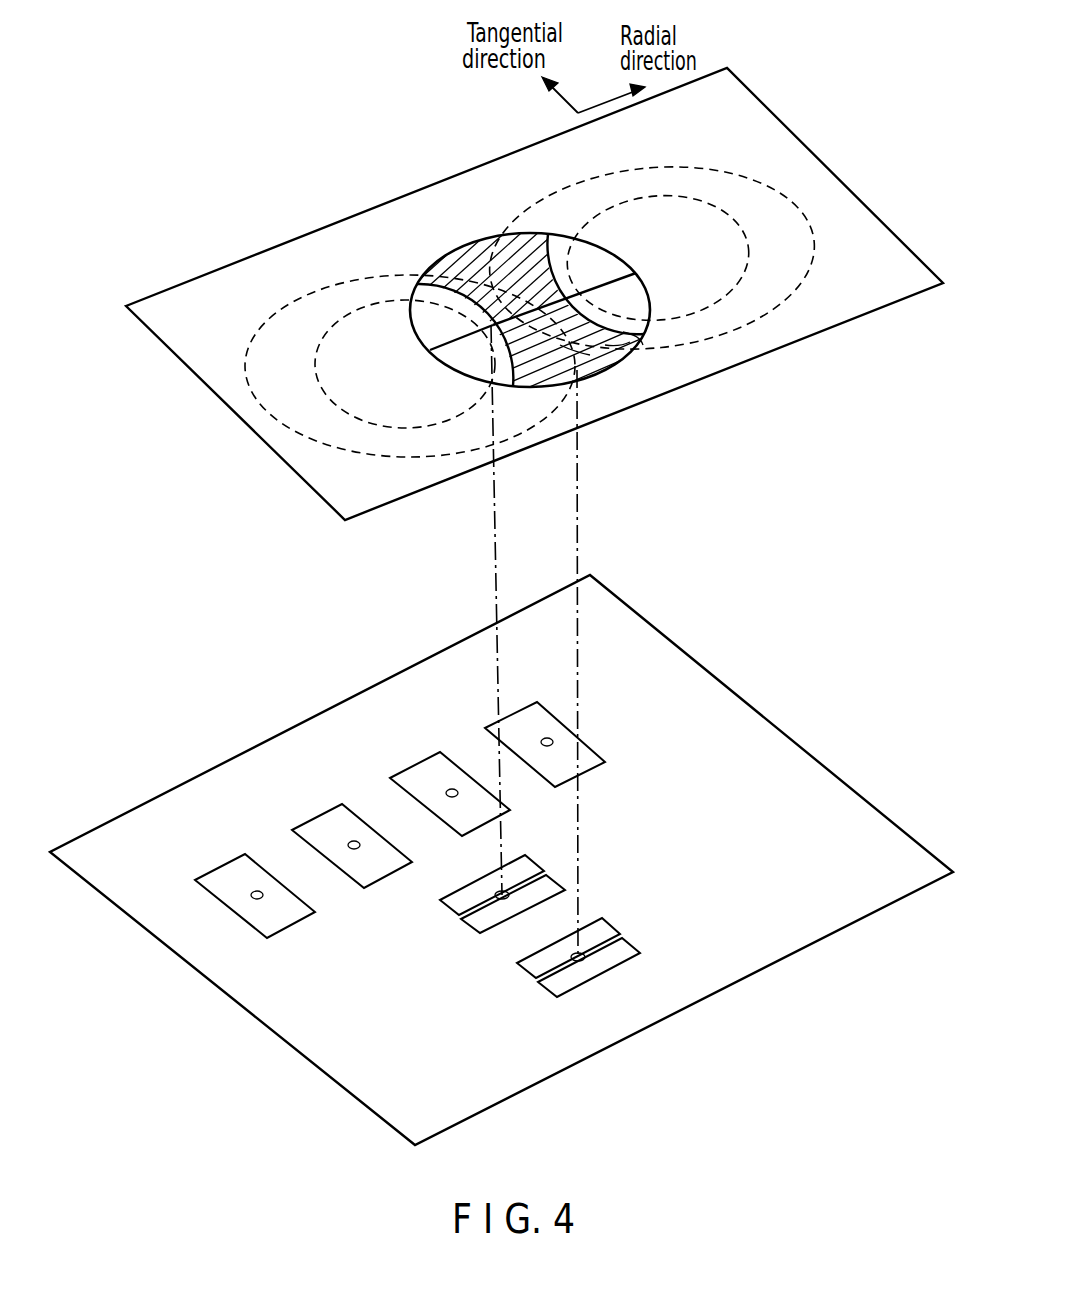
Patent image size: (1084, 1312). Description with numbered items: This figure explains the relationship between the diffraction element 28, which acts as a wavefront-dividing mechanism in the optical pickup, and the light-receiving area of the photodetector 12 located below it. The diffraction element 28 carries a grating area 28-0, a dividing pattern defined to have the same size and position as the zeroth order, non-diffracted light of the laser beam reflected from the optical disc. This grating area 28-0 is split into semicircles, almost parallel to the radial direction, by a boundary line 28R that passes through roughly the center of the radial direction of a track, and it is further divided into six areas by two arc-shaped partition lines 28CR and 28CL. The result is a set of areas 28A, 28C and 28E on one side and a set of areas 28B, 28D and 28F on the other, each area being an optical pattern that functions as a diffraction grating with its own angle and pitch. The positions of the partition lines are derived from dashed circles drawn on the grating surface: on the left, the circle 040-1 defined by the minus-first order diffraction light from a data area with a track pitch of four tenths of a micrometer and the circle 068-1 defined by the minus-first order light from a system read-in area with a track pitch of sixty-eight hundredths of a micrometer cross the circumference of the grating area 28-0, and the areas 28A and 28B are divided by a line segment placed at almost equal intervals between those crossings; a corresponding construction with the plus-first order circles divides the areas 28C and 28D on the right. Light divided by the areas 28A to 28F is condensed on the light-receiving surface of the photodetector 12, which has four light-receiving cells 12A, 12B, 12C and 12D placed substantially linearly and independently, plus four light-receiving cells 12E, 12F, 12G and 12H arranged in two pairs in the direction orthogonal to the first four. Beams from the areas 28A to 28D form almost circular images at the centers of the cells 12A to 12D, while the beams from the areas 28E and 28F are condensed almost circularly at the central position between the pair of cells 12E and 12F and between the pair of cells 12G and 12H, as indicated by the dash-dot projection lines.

The diffraction element 28 is at (282, 254).
The grating area 28-0 is at (477, 241).
The circle defined by −1st order diffraction light (0.4 μm track pitch) 040-1 is at (275, 332).
The circle defined by −1st order diffraction light (0.68 μm track pitch) 068-1 is at (365, 288).
The first area 28A is at (435, 322).
The second area 28B is at (468, 358).
The third area 28C is at (567, 272).
The fourth area 28D is at (605, 303).
The fifth area 28E is at (470, 252).
The sixth area 28F is at (608, 358).
The boundary line 28R is at (632, 266).
The arc-shaped partition line 28CL is at (577, 357).
The arc-shaped partition line 28CR is at (630, 343).
The photodetector 12 is at (432, 668).
The light-receiving cell 12A is at (493, 721).
The light-receiving cell 12B is at (413, 762).
The light-receiving cell 12C is at (315, 808).
The light-receiving cell 12D is at (217, 853).
The light-receiving cell 12E is at (447, 905).
The light-receiving cell 12F is at (472, 925).
The light-receiving cell 12G is at (527, 965).
The light-receiving cell 12H is at (550, 988).